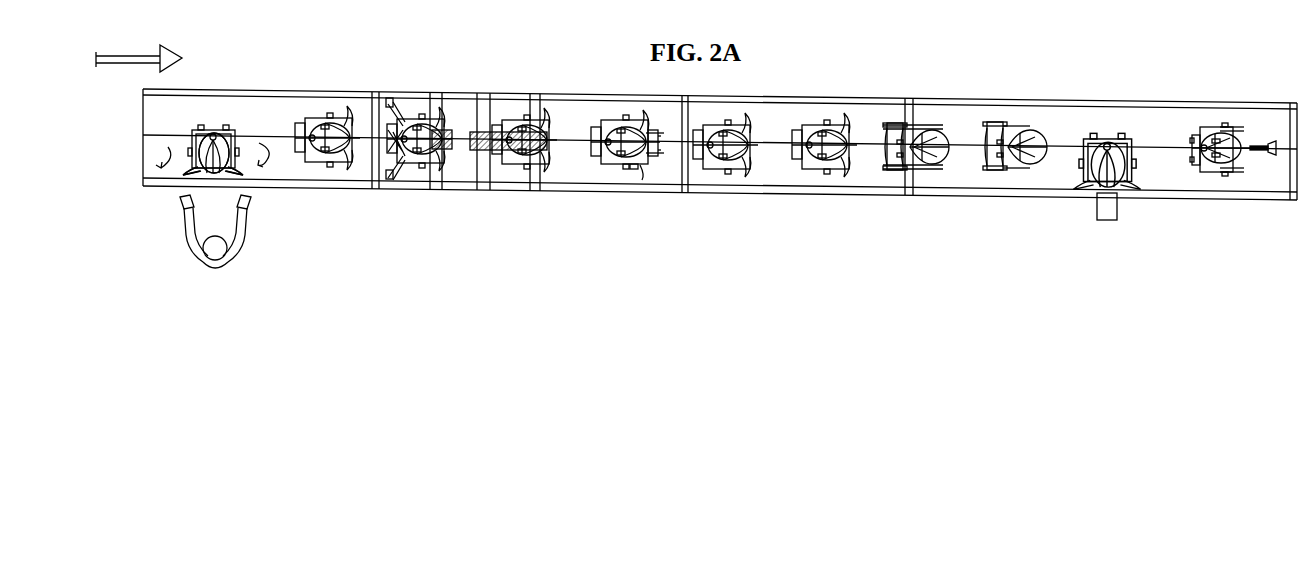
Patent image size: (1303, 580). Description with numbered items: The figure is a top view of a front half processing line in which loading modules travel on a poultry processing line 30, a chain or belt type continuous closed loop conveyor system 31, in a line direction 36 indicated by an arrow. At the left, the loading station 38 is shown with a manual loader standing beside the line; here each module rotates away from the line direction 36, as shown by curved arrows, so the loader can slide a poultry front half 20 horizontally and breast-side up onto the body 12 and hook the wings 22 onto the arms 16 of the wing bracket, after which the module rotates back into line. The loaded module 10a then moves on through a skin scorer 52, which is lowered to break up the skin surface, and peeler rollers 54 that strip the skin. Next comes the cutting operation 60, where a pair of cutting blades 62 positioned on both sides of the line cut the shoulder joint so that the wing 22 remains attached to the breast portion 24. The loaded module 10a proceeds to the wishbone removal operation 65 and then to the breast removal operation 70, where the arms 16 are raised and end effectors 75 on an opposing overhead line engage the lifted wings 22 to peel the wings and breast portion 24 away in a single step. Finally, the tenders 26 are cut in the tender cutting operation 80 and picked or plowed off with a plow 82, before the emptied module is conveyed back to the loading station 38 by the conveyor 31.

The loaded module 10a is at (313, 162).
The body 12 is at (224, 140).
The arms 16 is at (188, 145).
The poultry front half 20 is at (193, 163).
The poultry wings 22 is at (645, 163).
The breast portion 24 is at (641, 162).
The tenders 26 is at (1033, 160).
The poultry processing line 30 is at (307, 63).
The continuous closed loop conveyor system 31 is at (167, 110).
The line direction 36 is at (139, 44).
The loading station 38 is at (215, 273).
The skin scorer 52 is at (454, 124).
The peeler rollers 54 is at (487, 128).
The cutting operation 60 is at (625, 181).
The cutting blades 62 is at (655, 133).
The wishbone removal operation 65 is at (775, 181).
The breast removal operation 70 is at (916, 187).
The end effectors 75 is at (1020, 85).
The tender cutting operation 80 is at (1106, 207).
The plow 82 is at (1260, 158).